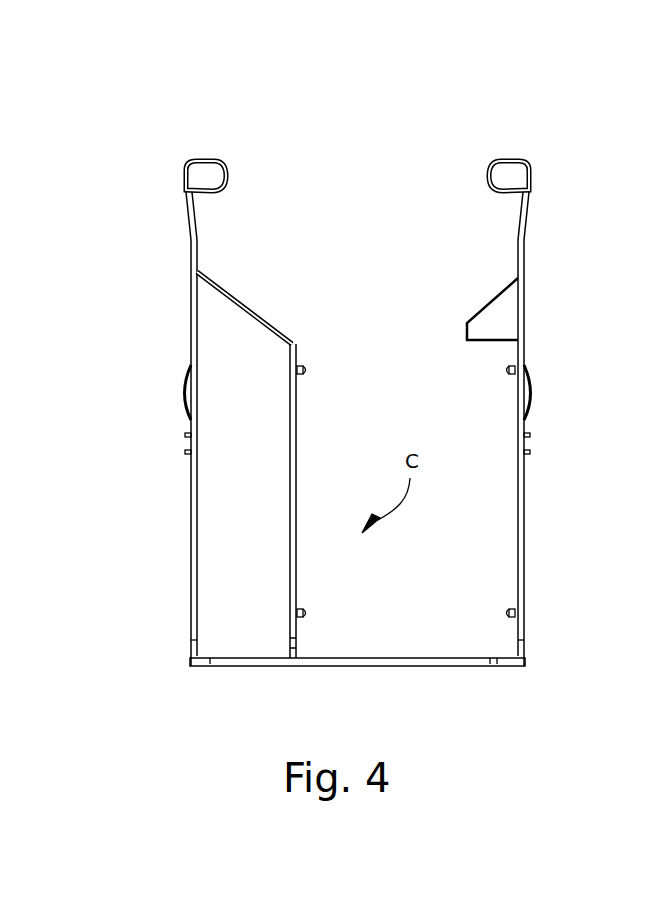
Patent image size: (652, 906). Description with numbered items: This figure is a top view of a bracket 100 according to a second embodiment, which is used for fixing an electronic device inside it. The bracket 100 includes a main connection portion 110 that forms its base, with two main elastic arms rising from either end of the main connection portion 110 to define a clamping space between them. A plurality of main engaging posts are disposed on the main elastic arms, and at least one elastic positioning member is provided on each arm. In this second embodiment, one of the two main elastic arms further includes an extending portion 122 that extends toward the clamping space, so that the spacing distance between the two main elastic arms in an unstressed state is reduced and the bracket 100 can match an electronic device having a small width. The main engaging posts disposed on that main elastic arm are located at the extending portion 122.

The bracket 100 is at (345, 112).
The main connection portion 110 is at (434, 665).
The extending portion 122 is at (242, 570).